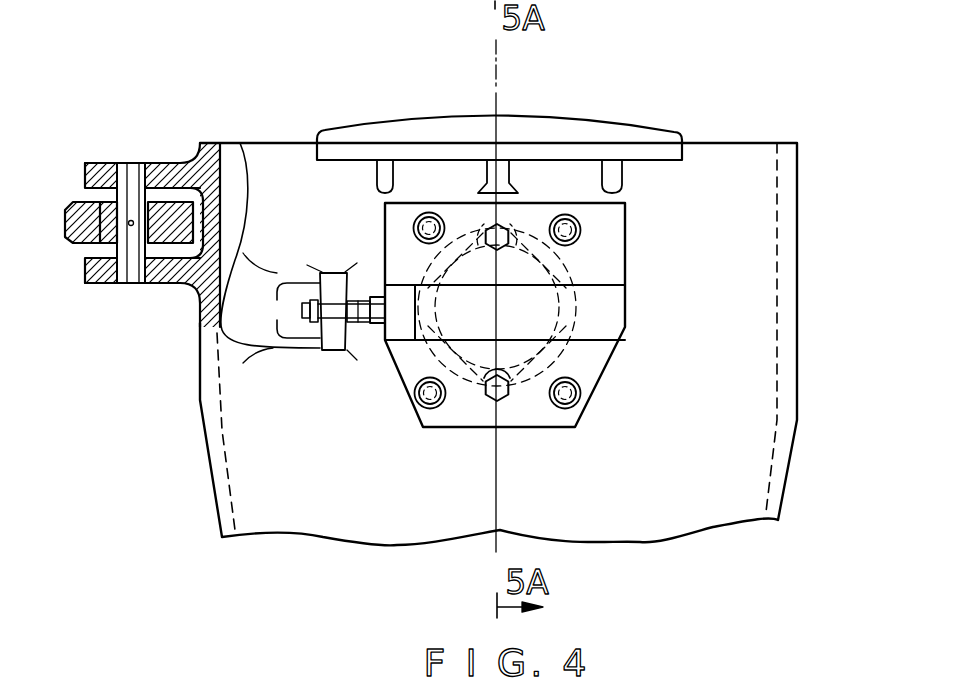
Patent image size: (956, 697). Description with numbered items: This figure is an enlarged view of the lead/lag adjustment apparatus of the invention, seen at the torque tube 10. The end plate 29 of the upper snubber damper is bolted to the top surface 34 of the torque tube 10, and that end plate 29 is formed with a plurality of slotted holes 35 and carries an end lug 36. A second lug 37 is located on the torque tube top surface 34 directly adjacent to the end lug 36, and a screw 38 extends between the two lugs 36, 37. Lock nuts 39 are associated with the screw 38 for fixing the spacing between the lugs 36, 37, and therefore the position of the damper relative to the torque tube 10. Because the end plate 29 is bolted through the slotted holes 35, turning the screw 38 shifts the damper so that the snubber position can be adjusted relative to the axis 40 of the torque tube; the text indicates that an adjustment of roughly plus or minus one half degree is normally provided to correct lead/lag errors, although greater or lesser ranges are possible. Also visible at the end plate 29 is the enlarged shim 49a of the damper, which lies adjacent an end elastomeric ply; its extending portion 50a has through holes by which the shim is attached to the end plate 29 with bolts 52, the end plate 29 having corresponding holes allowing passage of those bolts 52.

The torque tube 10 is at (713, 489).
The end plate 29 is at (610, 237).
The top surface 34 is at (746, 239).
The slotted holes 35 is at (422, 212).
The end lug 36 is at (378, 287).
The lug 37 is at (330, 277).
The screw 38 is at (370, 297).
The lock nuts 39 is at (372, 322).
The axis 40 is at (497, 93).
The enlarged shim 49a is at (510, 247).
The extending portion 50a is at (523, 375).
The bolts 52 is at (560, 262).